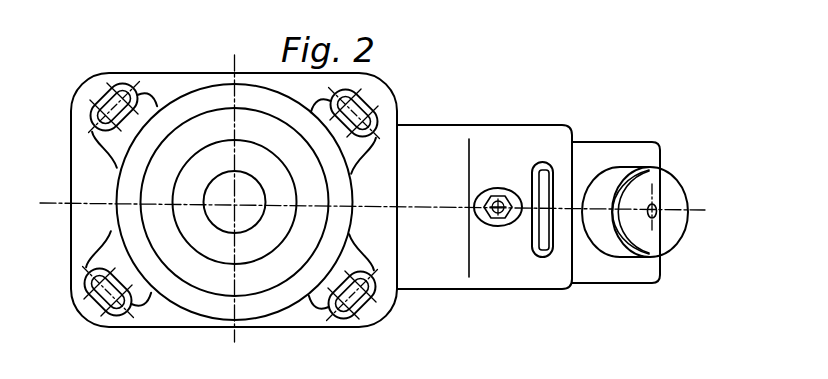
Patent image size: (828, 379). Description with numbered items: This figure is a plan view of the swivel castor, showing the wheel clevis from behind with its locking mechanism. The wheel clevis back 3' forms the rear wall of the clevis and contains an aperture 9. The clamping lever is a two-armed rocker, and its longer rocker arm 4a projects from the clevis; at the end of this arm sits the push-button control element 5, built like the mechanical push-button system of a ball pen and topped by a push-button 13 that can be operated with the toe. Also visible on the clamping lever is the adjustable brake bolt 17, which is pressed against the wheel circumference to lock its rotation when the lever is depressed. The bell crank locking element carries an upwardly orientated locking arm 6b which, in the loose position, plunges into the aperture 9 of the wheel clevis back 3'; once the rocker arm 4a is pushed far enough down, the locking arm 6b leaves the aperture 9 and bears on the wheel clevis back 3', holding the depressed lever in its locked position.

The wheel clevis back 3' is at (484, 173).
The adjustable brake bolt 17 is at (498, 200).
The aperture 9 is at (544, 162).
The locking arm 6b is at (553, 178).
The push-button control element 5 is at (624, 170).
The push-button 13 is at (665, 186).
The rocker arm 4a is at (597, 270).